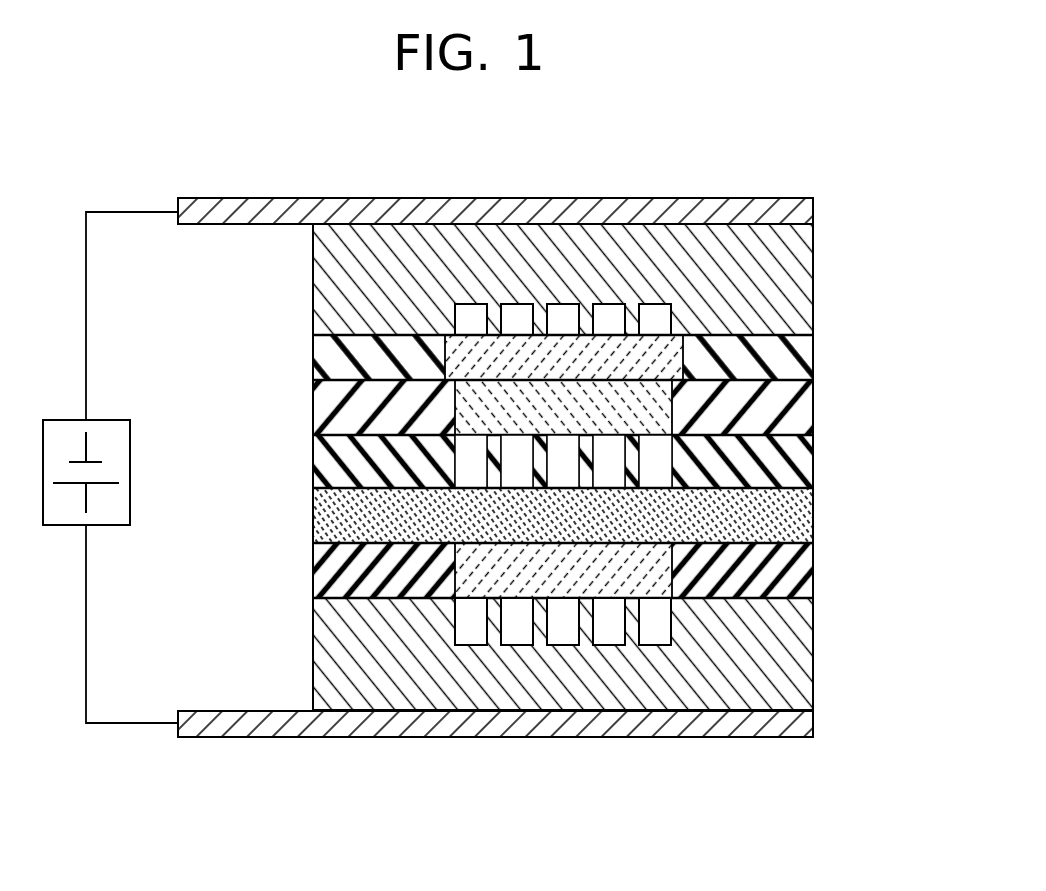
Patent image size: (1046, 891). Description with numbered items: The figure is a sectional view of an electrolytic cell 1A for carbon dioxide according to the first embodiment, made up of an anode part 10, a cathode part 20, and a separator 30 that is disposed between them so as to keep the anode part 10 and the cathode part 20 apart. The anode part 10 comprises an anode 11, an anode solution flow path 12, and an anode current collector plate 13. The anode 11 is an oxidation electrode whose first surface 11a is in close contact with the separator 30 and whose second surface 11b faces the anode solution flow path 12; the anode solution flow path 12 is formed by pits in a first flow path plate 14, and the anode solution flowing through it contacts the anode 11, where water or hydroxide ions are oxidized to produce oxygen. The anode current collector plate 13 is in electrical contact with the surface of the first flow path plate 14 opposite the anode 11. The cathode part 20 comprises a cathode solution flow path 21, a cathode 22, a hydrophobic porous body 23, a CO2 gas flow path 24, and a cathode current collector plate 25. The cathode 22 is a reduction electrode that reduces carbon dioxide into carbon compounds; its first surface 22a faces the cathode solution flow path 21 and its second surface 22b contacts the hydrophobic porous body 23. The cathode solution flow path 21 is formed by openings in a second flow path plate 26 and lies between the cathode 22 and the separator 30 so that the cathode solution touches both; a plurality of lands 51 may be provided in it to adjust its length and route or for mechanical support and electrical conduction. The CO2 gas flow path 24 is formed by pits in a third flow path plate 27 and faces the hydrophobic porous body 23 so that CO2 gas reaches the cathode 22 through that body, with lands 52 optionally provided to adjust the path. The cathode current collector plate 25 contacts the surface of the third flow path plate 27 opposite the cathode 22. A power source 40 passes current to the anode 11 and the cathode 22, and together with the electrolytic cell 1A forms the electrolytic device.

The electrolytic cell 1A is at (686, 171).
The anode part 10 is at (830, 546).
The anode 11 is at (468, 572).
The first surface 11a is at (472, 543).
The second surface 11b is at (457, 600).
The anode solution flow path 12 is at (472, 623).
The anode current collector plate 13 is at (272, 738).
The first flow path plate 14 is at (313, 679).
The cathode part 20 is at (830, 198).
The cathode solution flow path 21 is at (468, 462).
The cathode 22 is at (477, 412).
The first surface 22a is at (445, 437).
The second surface 22b is at (452, 380).
The hydrophobic porous body 23 is at (475, 357).
The CO2 gas flow path 24 is at (474, 325).
The cathode current collector plate 25 is at (279, 198).
The second flow path plate 26 is at (313, 463).
The third flow path plate 27 is at (313, 296).
The separator 30 is at (793, 520).
The power source 40 is at (130, 445).
The lands 51 is at (497, 442).
The lands 52 is at (585, 322).